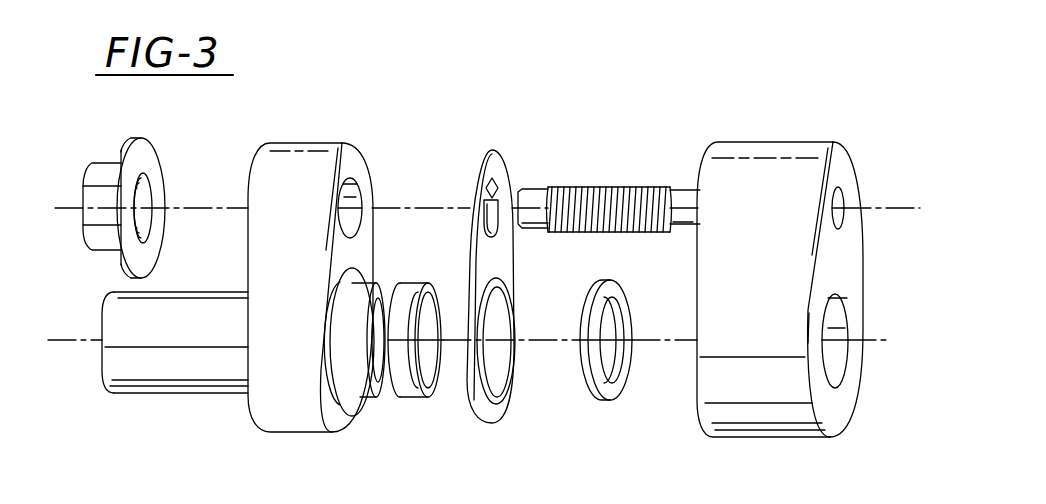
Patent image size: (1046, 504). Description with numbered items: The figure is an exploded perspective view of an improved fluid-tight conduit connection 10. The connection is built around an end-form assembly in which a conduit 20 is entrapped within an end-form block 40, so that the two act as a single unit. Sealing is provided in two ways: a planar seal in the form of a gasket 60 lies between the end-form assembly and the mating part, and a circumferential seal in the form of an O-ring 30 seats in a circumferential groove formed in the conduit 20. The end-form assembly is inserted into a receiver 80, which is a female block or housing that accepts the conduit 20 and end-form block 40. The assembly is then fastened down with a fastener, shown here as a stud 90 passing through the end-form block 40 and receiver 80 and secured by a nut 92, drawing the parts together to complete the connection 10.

The conduit connection 10 is at (683, 127).
The conduit 20 is at (112, 370).
The O-ring 30 is at (603, 397).
The end-form block 40 is at (322, 148).
The gasket 60 is at (508, 162).
The receiver 80 is at (834, 283).
The stud 90 is at (575, 187).
The nut 92 is at (102, 168).